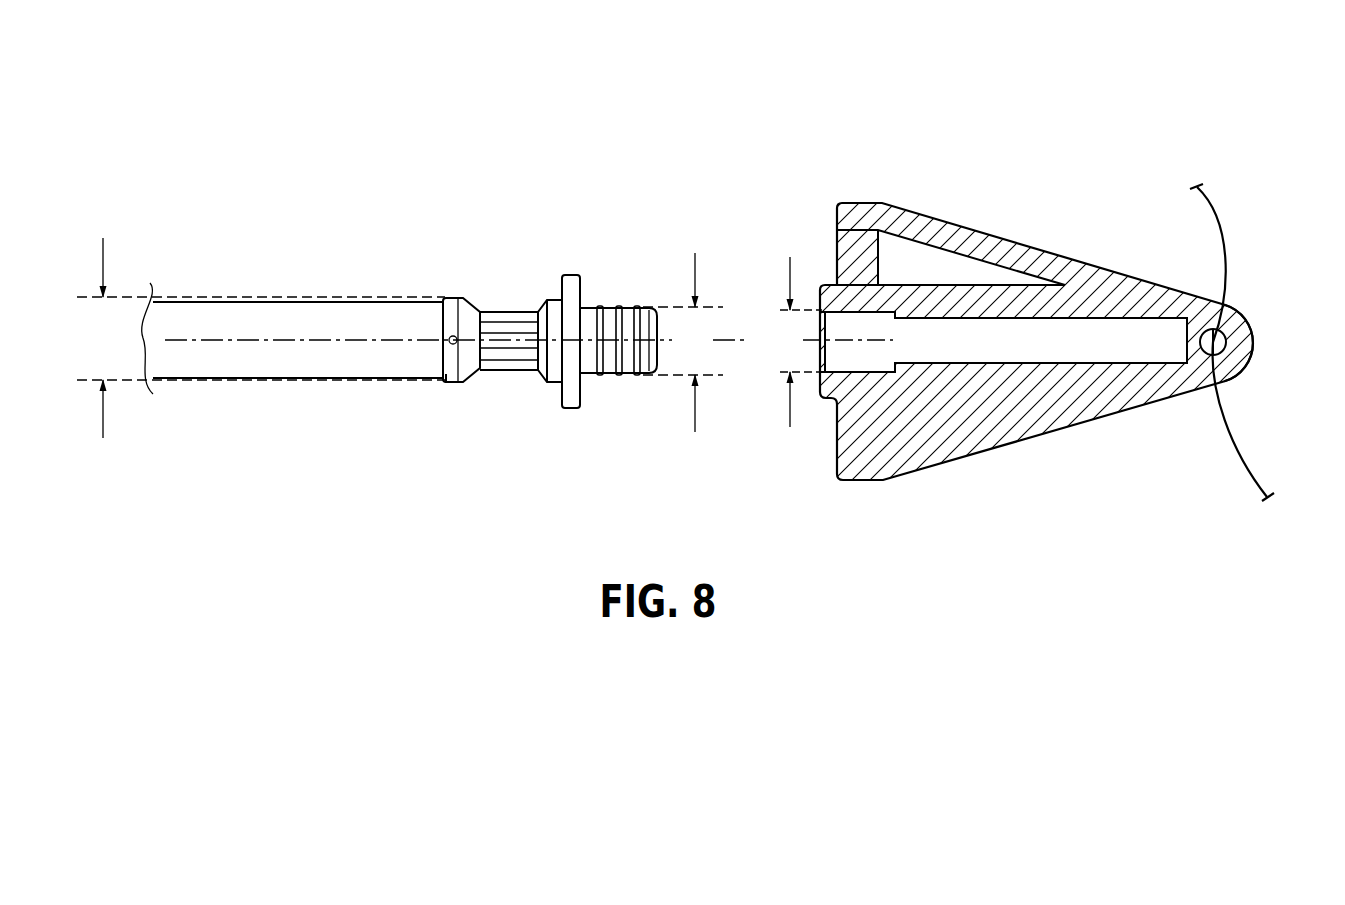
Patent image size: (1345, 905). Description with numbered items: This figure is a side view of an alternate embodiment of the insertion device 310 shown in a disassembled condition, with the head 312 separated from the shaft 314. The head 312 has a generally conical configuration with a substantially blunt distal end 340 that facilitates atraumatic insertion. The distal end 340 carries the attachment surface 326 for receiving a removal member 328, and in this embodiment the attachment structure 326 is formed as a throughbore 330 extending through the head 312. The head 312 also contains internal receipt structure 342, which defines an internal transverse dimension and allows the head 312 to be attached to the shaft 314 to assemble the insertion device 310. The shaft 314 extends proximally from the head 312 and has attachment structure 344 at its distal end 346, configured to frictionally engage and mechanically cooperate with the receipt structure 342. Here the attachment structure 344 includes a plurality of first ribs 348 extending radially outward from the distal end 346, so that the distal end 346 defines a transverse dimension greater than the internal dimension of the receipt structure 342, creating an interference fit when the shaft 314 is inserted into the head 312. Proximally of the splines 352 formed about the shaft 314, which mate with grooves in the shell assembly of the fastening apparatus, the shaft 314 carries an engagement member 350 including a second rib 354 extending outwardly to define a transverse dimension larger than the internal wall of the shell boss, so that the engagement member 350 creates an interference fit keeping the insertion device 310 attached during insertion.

The insertion device 310 is at (1020, 98).
The head 312 is at (1118, 265).
The shaft 314 is at (270, 295).
The attachment surface 326 is at (1228, 362).
The removal member 328 is at (1257, 472).
The throughbore 330 is at (1203, 347).
The distal end 340 is at (1257, 323).
The receipt structure 342 is at (898, 336).
The attachment structure 344 is at (618, 302).
The distal end 346 is at (647, 300).
The first ribs 348 is at (600, 375).
The engagement member 350 is at (453, 295).
The splines 352 is at (503, 303).
The second rib 354 is at (453, 376).